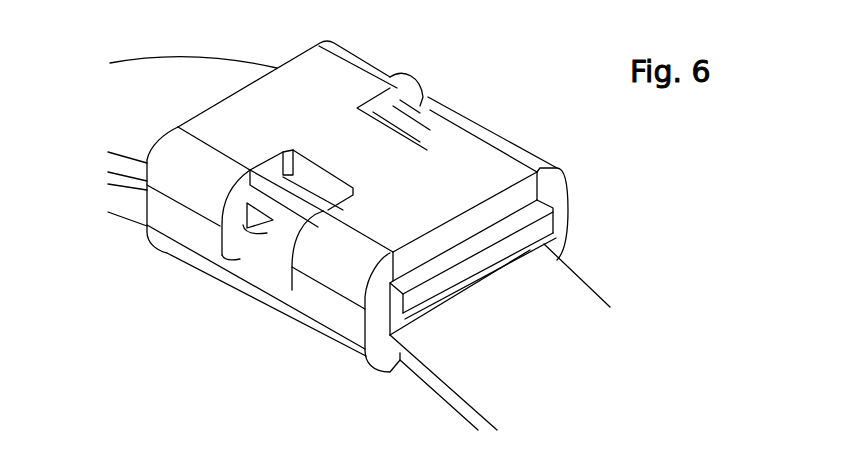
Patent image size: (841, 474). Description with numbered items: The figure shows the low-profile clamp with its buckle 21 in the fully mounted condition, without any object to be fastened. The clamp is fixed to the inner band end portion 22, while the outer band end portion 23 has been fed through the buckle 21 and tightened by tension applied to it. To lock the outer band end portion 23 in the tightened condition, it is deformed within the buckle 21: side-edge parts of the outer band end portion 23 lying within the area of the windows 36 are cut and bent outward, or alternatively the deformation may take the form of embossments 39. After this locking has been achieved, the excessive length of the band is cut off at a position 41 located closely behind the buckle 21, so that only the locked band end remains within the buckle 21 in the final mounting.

The buckle 21 is at (482, 170).
The inner band end portion 22 is at (432, 368).
The outer band end portion 23 is at (165, 67).
The window 36 is at (276, 267).
The embossment 39 is at (285, 221).
The position 41 is at (520, 237).